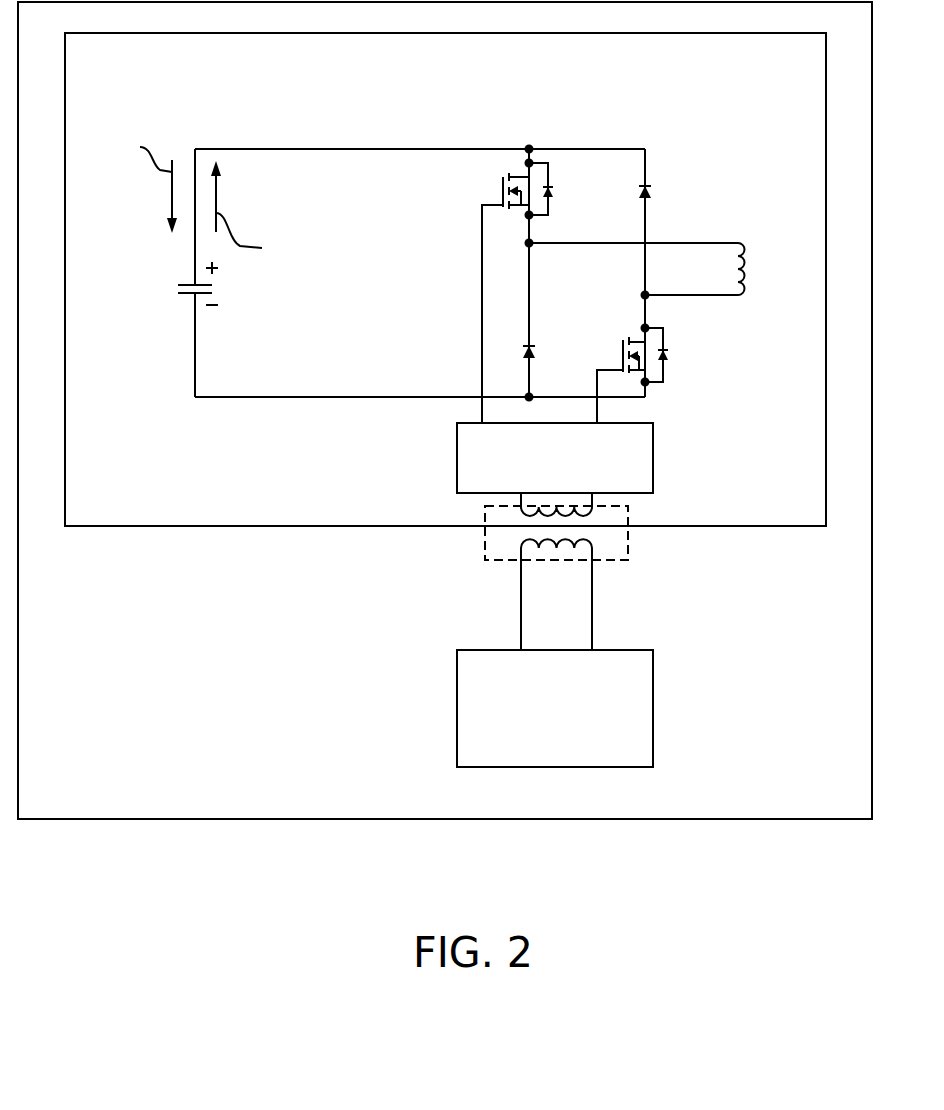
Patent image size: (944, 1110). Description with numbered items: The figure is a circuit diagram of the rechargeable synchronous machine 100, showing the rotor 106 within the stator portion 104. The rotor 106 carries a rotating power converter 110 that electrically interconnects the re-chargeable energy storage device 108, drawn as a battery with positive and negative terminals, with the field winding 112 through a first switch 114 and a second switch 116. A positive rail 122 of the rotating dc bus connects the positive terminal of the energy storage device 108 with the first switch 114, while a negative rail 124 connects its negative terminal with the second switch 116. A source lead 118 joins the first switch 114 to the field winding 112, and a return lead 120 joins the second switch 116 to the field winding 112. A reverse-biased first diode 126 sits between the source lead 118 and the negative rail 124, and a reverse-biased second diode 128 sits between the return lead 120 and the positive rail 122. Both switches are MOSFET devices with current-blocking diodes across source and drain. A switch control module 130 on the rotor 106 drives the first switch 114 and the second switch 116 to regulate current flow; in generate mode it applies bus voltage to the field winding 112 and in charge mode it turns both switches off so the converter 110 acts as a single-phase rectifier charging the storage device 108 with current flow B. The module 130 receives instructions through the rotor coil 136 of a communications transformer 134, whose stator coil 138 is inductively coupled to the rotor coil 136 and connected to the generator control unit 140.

The rechargeable synchronous machine 100 is at (148, 878).
The stator portion 104 is at (855, 801).
The rotor 106 is at (762, 76).
The re-chargeable energy storage device 108 is at (165, 318).
The rotating power converter 110 is at (439, 262).
The field winding 112 is at (665, 254).
The first switch 114 is at (478, 191).
The second switch 116 is at (690, 378).
The source lead 118 is at (683, 243).
The return lead 120 is at (700, 295).
The positive rail 122 is at (350, 148).
The negative rail 124 is at (268, 397).
The first diode 126 is at (531, 353).
The second diode 128 is at (648, 193).
The switch control module 130 is at (457, 455).
The communications transformer 134 is at (548, 566).
The rotor coil 136 is at (594, 516).
The stator coil 138 is at (562, 540).
The generator control unit 140 is at (653, 733).